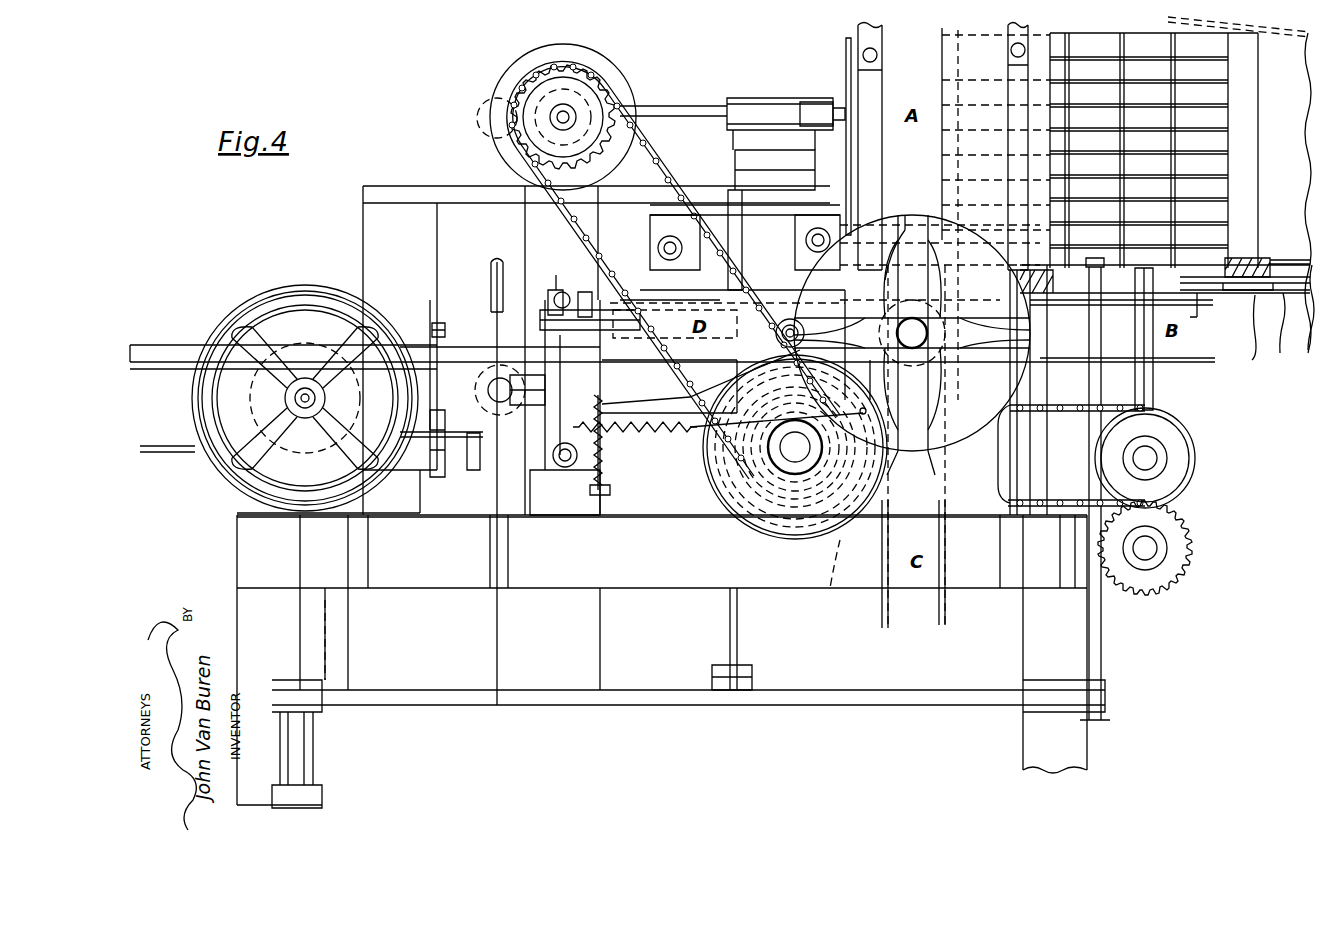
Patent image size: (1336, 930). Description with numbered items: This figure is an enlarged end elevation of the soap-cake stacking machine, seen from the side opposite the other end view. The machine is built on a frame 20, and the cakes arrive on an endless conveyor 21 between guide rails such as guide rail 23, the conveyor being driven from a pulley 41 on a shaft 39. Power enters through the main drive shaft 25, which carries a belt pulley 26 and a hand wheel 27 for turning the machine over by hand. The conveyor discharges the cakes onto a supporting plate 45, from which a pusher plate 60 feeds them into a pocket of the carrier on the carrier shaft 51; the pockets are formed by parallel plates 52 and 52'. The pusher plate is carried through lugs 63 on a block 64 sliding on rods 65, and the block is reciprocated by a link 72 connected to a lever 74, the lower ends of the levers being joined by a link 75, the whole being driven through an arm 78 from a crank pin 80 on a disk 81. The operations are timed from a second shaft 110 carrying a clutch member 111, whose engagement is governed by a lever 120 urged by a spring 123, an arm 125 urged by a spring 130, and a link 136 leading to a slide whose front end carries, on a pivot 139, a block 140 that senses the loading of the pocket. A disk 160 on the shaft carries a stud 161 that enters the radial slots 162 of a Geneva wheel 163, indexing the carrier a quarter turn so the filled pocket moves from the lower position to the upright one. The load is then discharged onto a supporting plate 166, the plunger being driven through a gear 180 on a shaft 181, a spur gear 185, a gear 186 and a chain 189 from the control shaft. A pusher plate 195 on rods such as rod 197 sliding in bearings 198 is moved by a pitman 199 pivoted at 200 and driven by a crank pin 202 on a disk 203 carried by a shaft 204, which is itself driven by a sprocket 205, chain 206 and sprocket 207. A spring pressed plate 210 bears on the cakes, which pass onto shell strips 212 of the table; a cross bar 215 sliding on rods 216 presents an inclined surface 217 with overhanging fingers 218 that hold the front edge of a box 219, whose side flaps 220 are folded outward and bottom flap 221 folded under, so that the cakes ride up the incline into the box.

The frame 20 is at (652, 577).
The conveyor 21 is at (163, 446).
The guide rail 23 is at (170, 348).
The main drive shaft 25 is at (305, 398).
The pulley 26 is at (226, 318).
The hand wheel 27 is at (318, 300).
The shaft 39 is at (500, 390).
The pulley 41 is at (495, 402).
The supporting plate 45 is at (630, 430).
The carrier shaft 51 is at (928, 333).
The parallel plate 52 is at (1092, 391).
The parallel plate 52' is at (933, 390).
The pusher plate 60 is at (592, 290).
The lug 63 is at (597, 262).
The block 64 is at (820, 240).
The rod 65 is at (660, 245).
The link 72 is at (733, 232).
The lever 74 is at (737, 635).
The link 75 is at (752, 670).
The arm 78 is at (474, 470).
The crank pin 80 is at (440, 477).
The disk 81 is at (445, 331).
The second shaft 110 is at (786, 462).
The clutch member 111 is at (765, 362).
The lever 120 is at (663, 413).
The spring 123 is at (598, 488).
The arm 125 is at (547, 455).
The spring 130 is at (612, 440).
The link 136 is at (585, 300).
The pivot 139 is at (556, 290).
The block 140 is at (628, 338).
The disk 160 is at (912, 260).
The stud 161 is at (786, 320).
The radial slot 162 is at (902, 446).
The Geneva wheel 163 is at (1047, 336).
The supporting plate 166 is at (1197, 305).
The gear 180 is at (1160, 265).
The shaft 181 is at (1153, 386).
The spur gear 185 is at (1192, 542).
The gear 186 is at (1192, 446).
The chain 189 is at (1042, 405).
The pusher plate 195 is at (846, 52).
The rod 197 is at (672, 108).
The bearing 198 is at (740, 100).
The pitman 199 is at (622, 98).
The pivot 200 is at (808, 100).
The crank pin 202 is at (492, 105).
The disk 203 is at (608, 62).
The shaft 204 is at (565, 104).
The sprocket 205 is at (590, 110).
The chain 206 is at (690, 168).
The sprocket 207 is at (840, 540).
The spring pressed plate 210 is at (1103, 352).
The shell strip 212 is at (1280, 335).
The cross bar 215 is at (1250, 262).
The rod 216 is at (1253, 358).
The inclined surface 217 is at (1238, 262).
The overhanging finger 218 is at (1270, 262).
The box 219 is at (1180, 193).
The side flap 220 is at (1240, 40).
The bottom flap 221 is at (1310, 300).